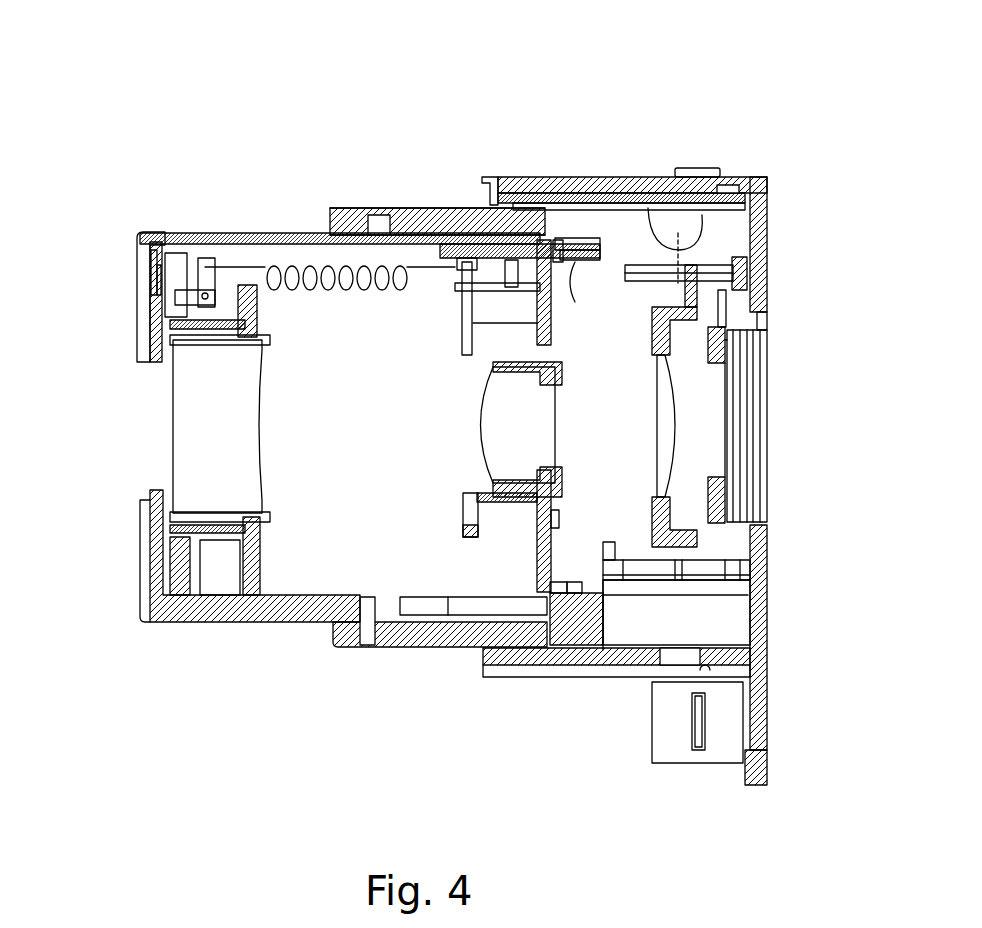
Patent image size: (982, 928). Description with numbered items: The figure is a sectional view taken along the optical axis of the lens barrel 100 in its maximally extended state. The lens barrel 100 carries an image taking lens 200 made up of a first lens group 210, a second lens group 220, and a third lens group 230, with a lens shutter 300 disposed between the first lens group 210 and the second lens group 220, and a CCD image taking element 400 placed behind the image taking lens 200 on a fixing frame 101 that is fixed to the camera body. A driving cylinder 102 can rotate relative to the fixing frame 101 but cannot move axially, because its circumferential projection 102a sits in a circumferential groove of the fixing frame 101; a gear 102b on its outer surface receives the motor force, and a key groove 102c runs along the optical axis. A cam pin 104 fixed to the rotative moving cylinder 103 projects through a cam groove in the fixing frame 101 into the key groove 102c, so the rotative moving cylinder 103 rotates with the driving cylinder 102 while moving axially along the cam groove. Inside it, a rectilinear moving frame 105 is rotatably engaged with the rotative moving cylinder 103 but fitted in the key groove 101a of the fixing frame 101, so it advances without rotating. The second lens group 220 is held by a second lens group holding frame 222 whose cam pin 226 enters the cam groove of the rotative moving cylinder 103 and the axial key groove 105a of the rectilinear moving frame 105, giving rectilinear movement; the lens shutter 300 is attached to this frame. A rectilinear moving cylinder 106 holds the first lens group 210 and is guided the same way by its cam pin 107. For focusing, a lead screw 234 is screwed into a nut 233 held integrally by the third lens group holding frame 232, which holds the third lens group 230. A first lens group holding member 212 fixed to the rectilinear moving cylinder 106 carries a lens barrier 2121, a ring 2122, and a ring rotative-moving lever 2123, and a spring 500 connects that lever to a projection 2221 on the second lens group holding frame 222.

The lens barrel 100 is at (425, 80).
The fixing frame 101 is at (768, 232).
The key groove 101a is at (655, 177).
The driving cylinder 102 is at (598, 177).
The projection 102a is at (735, 177).
The gear 102b is at (700, 168).
The key groove 102c is at (683, 688).
The rotative moving cylinder 103 is at (413, 208).
The cam pin 104 is at (550, 678).
The rectilinear moving frame 105 is at (352, 208).
The key groove 105a is at (392, 208).
The rectilinear moving cylinder 106 is at (250, 233).
The cam pin 107 is at (366, 648).
The image taking lens 200 is at (95, 392).
The first lens group 210 is at (190, 428).
The first lens group holding member 212 is at (258, 310).
The lens barrier 2121 is at (155, 293).
The ring 2122 is at (170, 232).
The ring rotative-moving lever 2123 is at (205, 258).
The second lens group 220 is at (480, 430).
The second lens group holding frame 222 is at (552, 310).
The projection 2221 is at (458, 208).
The cam pin 226 is at (548, 177).
The third lens group 230 is at (660, 427).
The third lens group holding frame 232 is at (652, 500).
The nut 233 is at (650, 567).
The lead screw 234 is at (768, 572).
The lens shutter 300 is at (465, 350).
The CCD image taking element 400 is at (722, 420).
The spring 500 is at (375, 292).